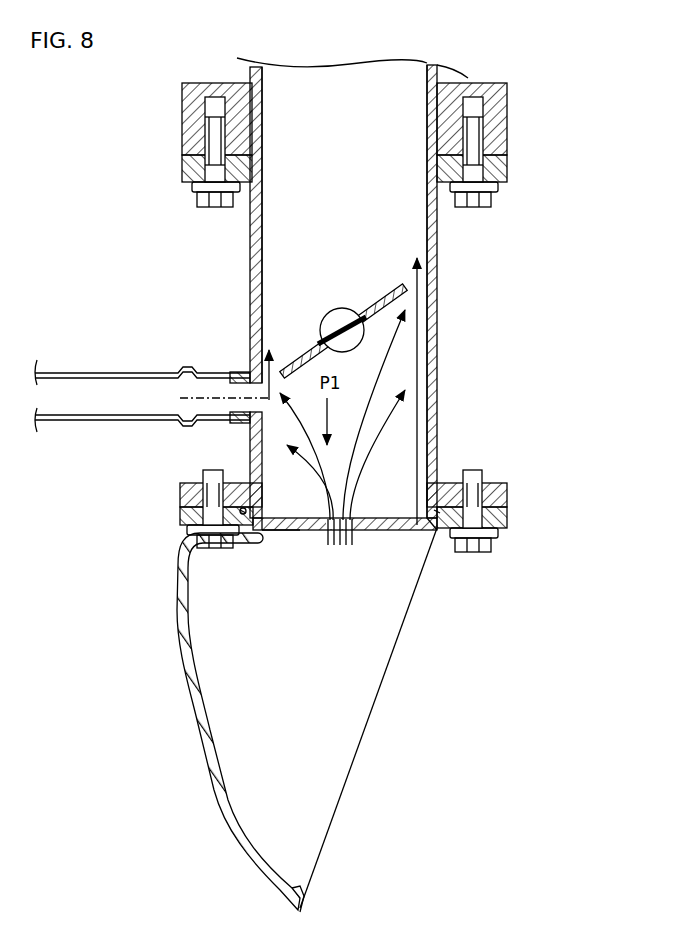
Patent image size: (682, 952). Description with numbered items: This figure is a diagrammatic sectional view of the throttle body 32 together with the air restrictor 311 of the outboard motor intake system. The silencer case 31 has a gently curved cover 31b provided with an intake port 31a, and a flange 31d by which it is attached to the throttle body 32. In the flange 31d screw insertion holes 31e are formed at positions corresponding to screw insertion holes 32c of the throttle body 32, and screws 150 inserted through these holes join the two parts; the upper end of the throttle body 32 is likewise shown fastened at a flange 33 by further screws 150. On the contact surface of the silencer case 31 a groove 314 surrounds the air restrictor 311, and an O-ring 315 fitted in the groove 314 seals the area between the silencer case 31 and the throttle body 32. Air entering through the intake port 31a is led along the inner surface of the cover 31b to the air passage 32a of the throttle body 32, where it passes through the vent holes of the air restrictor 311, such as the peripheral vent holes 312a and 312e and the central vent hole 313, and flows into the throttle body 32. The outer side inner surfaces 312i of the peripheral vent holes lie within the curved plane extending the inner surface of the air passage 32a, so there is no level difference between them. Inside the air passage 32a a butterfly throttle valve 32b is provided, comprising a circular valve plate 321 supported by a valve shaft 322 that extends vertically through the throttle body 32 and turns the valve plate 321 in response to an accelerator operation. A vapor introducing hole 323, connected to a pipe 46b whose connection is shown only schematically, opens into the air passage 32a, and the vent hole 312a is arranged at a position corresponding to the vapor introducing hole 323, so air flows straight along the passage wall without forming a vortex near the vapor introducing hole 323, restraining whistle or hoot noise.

The silencer case 31 is at (288, 720).
The intake port 31a is at (393, 795).
The cover 31b is at (195, 705).
The flange 31d is at (180, 512).
The screw insertion holes 31e is at (209, 495).
The throttle body 32 is at (250, 277).
The air passage 32a is at (262, 260).
The throttle valve 32b is at (422, 331).
The screw insertion holes 32c is at (222, 486).
The upper flange 33 is at (507, 100).
The pipe 46b is at (70, 373).
The screws 150 is at (200, 203).
The air restrictor 311 is at (323, 532).
The vent hole 312a is at (280, 533).
The vent hole 312e is at (425, 531).
The outer side inner surfaces 312i is at (267, 518).
The vent hole 313 is at (357, 533).
The groove 314 is at (241, 531).
The O-ring 315 is at (243, 512).
The valve plate 321 is at (405, 290).
The valve shaft 322 is at (360, 336).
The vapor introducing hole 323 is at (230, 383).